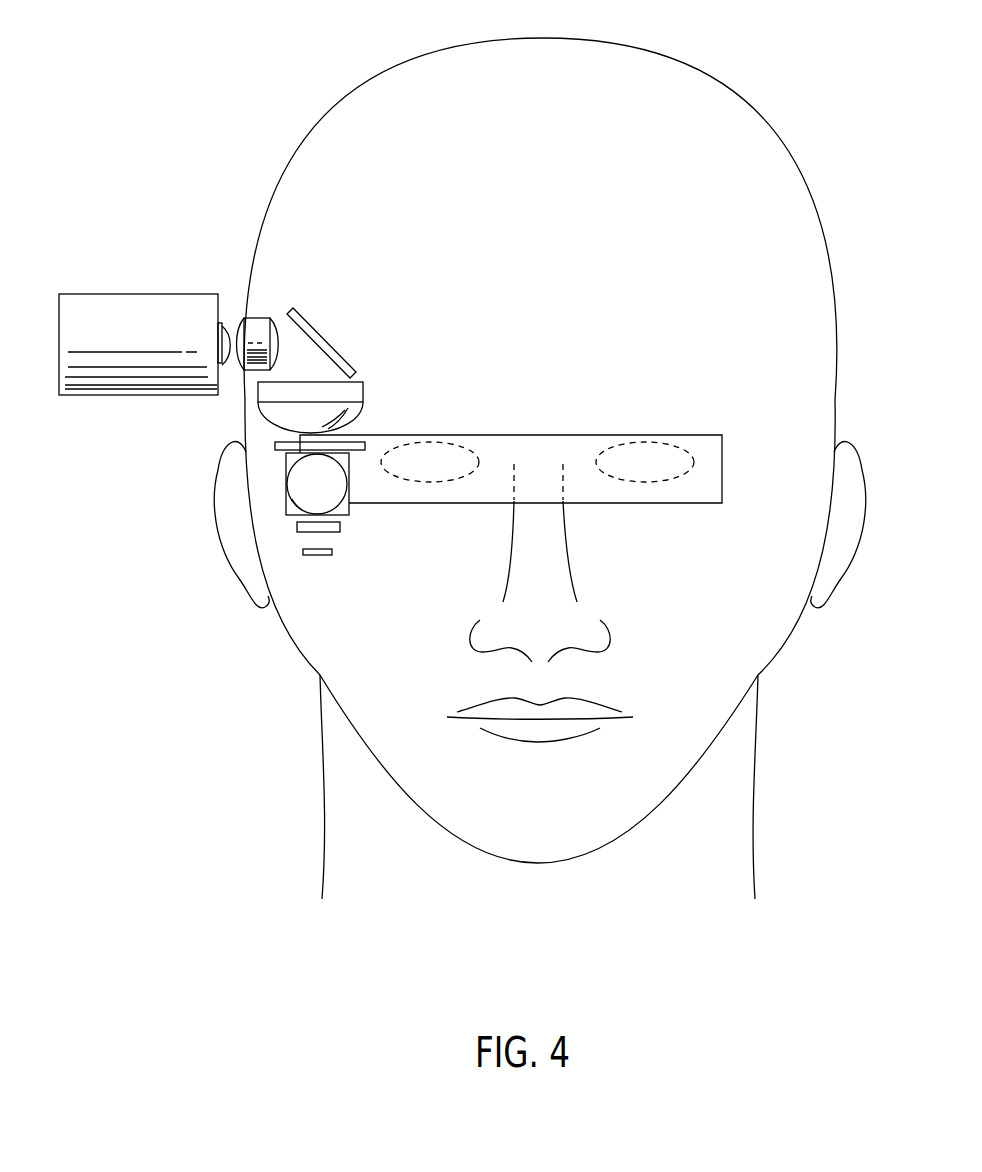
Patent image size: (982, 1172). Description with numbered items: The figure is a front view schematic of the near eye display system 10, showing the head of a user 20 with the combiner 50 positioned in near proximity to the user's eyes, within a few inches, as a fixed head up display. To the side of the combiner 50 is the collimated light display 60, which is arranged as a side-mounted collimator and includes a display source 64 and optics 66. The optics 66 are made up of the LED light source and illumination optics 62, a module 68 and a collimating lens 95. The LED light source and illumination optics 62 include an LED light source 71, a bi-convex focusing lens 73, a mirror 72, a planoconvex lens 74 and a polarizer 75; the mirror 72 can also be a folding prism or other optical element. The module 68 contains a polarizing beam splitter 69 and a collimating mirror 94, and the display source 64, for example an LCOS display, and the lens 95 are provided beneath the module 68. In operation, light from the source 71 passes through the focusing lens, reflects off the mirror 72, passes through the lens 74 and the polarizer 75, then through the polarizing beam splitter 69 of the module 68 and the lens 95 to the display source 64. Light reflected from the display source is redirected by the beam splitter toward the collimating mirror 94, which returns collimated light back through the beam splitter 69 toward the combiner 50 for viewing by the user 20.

The near eye display system 10 is at (193, 188).
The user 20 is at (575, 112).
The combiner 50 is at (588, 437).
The collimated light display 60 is at (137, 467).
The LED light source and illumination optics 62 is at (197, 260).
The display source 64 is at (332, 552).
The optics 66 is at (387, 352).
The module 68 is at (290, 508).
The polarizing beam splitter 69 is at (290, 462).
The LED light source 71 is at (102, 385).
The mirror 72 is at (316, 333).
The bi-convex focusing lens 73 is at (260, 322).
The planoconvex lens 74 is at (363, 392).
The polarizer 75 is at (277, 447).
The collimating mirror 94 is at (301, 505).
The collimating lens 95 is at (340, 527).